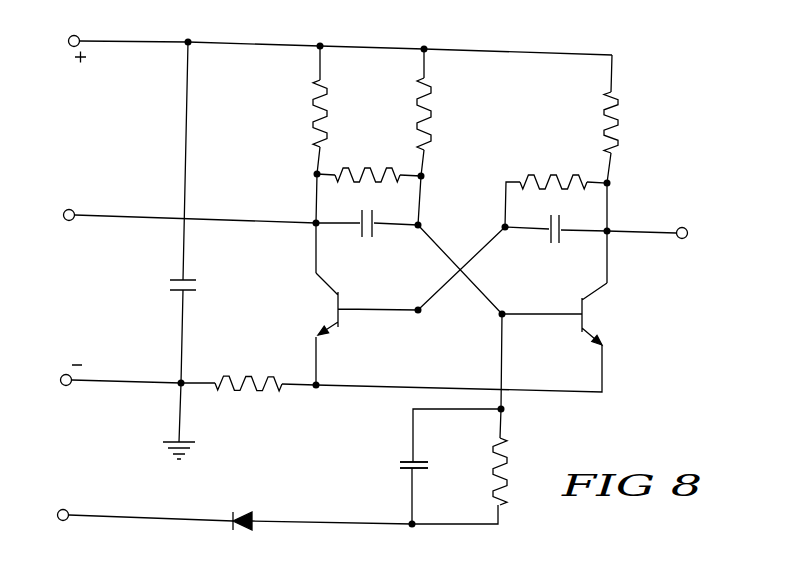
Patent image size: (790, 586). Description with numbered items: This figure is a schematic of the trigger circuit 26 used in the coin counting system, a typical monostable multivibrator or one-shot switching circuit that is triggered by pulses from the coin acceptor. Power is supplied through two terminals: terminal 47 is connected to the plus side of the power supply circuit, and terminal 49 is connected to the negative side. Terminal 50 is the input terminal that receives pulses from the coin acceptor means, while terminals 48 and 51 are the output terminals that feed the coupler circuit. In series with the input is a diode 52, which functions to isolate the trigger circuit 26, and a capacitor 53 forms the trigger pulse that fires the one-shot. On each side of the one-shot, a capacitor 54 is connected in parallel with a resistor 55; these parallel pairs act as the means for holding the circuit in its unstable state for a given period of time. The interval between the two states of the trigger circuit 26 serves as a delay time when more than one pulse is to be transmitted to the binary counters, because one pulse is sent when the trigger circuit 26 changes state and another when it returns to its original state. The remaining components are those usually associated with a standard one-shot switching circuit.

The trigger circuit 26 is at (648, 345).
The terminal 47 is at (72, 35).
The output terminal 48 is at (64, 211).
The terminal 49 is at (63, 373).
The input terminal 50 is at (61, 510).
The output terminal 51 is at (686, 239).
The diode 52 is at (248, 516).
The capacitor 53 is at (410, 457).
The capacitors 54 is at (373, 222).
The resistors 55 is at (368, 170).